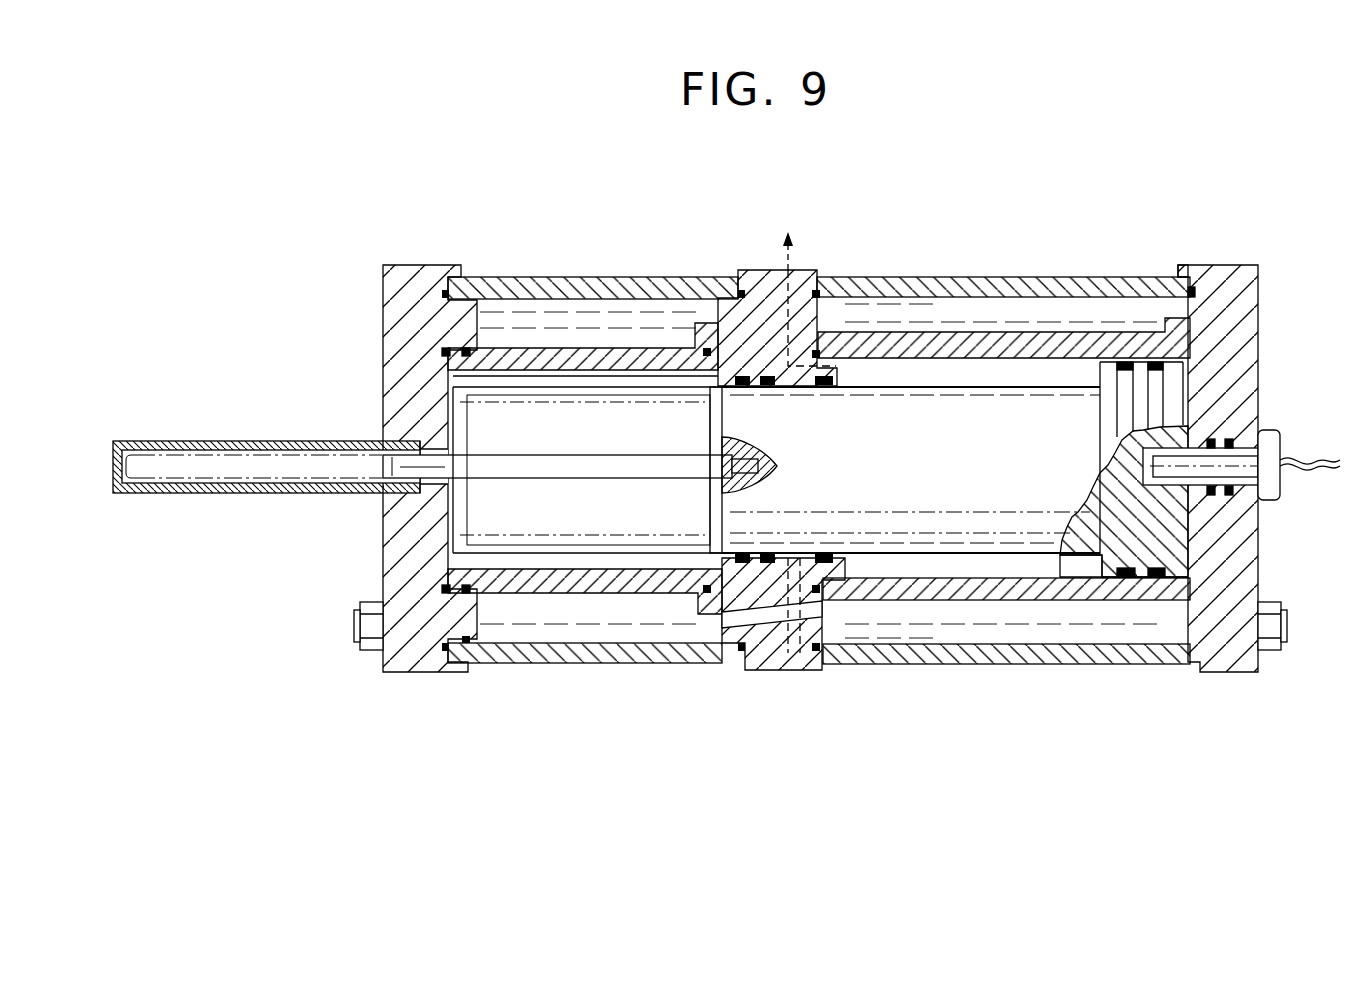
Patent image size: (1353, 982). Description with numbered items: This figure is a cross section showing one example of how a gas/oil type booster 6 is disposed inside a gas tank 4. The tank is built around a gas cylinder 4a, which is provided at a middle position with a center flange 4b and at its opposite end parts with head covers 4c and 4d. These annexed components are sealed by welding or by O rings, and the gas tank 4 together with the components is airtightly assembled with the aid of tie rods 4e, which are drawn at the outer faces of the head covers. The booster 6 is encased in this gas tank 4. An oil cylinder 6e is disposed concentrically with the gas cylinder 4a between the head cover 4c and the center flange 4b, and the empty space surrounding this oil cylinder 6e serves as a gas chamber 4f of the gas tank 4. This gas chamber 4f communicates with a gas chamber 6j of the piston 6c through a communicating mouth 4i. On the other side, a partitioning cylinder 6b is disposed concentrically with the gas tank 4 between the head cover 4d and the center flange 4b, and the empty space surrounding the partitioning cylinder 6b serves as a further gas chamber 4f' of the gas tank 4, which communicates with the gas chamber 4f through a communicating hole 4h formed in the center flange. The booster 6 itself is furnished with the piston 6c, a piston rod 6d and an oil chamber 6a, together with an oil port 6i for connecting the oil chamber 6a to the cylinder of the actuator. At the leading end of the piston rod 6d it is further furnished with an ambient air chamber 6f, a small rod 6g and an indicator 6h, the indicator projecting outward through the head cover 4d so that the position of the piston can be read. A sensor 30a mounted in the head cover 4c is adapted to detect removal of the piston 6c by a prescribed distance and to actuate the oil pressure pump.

The gas tank 4 is at (975, 272).
The gas cylinder 4a is at (865, 277).
The center flange 4b is at (742, 270).
The head cover 4c is at (1247, 338).
The head cover 4d is at (392, 309).
The tie rod 4e is at (1270, 650).
The gas chamber 4f is at (1004, 403).
The gas chamber 4f' is at (585, 410).
The communicating hole 4h is at (770, 630).
The communicating mouth 4i is at (1208, 264).
The booster 6 is at (963, 584).
The oil chamber 6a is at (1082, 362).
The partitioning cylinder 6b is at (597, 348).
The piston 6c is at (1155, 545).
The piston rod 6d is at (882, 545).
The oil cylinder 6e is at (913, 332).
The ambient air chamber 6f is at (528, 378).
The small rod 6g is at (540, 470).
The indicator 6h is at (270, 494).
The oil port 6i is at (785, 262).
The gas chamber 6j is at (1195, 541).
The sensor 30a is at (1247, 456).